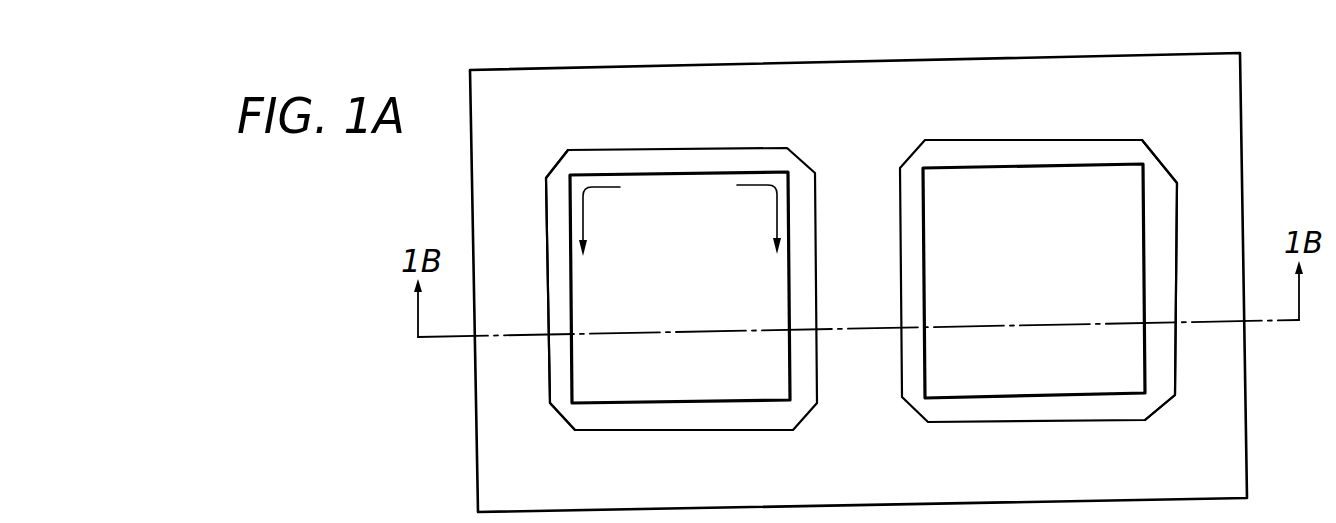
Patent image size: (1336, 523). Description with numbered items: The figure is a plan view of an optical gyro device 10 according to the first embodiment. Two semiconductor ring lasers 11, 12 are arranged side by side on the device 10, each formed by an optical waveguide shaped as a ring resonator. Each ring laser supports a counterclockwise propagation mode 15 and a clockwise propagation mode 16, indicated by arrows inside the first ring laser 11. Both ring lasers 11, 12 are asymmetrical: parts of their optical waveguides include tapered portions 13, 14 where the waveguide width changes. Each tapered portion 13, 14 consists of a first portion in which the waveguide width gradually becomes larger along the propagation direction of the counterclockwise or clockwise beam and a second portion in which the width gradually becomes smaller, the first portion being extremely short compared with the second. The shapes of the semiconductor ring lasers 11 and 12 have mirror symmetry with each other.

The optical gyro device 10 is at (1183, 59).
The semiconductor ring laser 11 is at (728, 153).
The semiconductor ring laser 12 is at (1086, 146).
The tapered portion 13 is at (533, 207).
The tapered portion 14 is at (1222, 151).
The counterclockwise propagation mode 15 is at (586, 222).
The clockwise propagation mode 16 is at (774, 218).